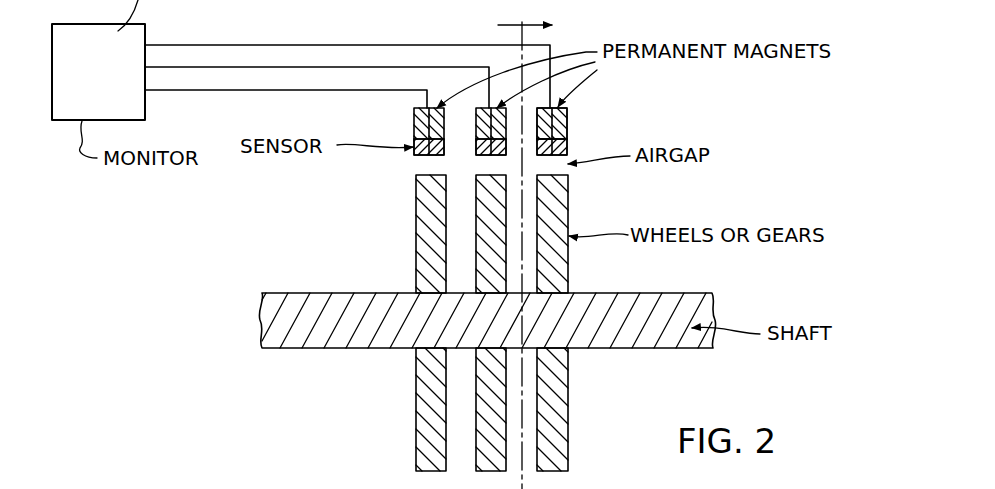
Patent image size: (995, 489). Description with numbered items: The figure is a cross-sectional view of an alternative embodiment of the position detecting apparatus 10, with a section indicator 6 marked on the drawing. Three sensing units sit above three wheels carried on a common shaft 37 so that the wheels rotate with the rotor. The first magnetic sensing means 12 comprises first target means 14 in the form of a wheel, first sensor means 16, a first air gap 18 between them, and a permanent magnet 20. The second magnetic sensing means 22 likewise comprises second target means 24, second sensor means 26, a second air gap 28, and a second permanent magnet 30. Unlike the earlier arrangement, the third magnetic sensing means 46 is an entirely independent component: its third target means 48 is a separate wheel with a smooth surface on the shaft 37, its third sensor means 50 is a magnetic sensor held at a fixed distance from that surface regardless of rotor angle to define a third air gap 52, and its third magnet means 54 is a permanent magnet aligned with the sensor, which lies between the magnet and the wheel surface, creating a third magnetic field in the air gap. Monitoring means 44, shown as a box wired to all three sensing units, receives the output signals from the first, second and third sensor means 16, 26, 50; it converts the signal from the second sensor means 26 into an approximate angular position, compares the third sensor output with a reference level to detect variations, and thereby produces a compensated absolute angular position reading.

The section line 6- 6 is at (514, 250).
The position detecting apparatus 10 is at (357, 193).
The first magnetic sensing means 12 is at (400, 125).
The first target means 14 is at (415, 255).
The first sensor means 16 is at (413, 157).
The first air gap 18 is at (417, 173).
The permanent magnet 20 is at (428, 108).
The second magnetic sensing means 22 is at (450, 85).
The second target means 24 is at (476, 233).
The second sensor means 26 is at (476, 153).
The second air gap 28 is at (490, 165).
The second permanent magnet 30 is at (506, 117).
The shaft 37 is at (620, 336).
The monitoring means 44 is at (145, 470).
The third magnetic sensing means 46 is at (600, 120).
The third target means 48 is at (568, 175).
The third sensor means 50 is at (568, 145).
The third air gap 52 is at (543, 163).
The third magnet means 54 is at (569, 116).